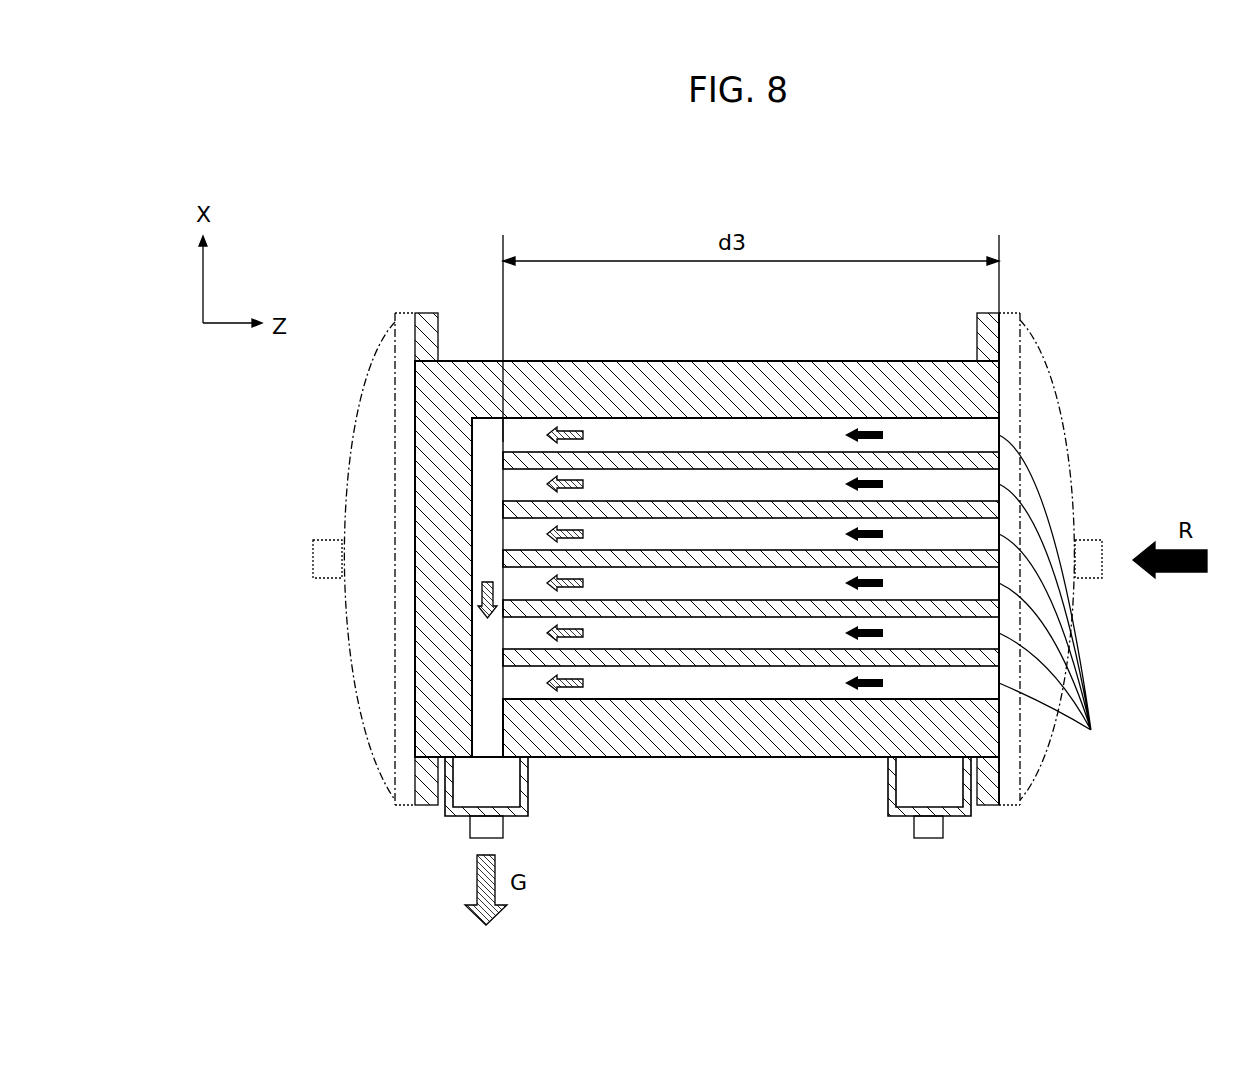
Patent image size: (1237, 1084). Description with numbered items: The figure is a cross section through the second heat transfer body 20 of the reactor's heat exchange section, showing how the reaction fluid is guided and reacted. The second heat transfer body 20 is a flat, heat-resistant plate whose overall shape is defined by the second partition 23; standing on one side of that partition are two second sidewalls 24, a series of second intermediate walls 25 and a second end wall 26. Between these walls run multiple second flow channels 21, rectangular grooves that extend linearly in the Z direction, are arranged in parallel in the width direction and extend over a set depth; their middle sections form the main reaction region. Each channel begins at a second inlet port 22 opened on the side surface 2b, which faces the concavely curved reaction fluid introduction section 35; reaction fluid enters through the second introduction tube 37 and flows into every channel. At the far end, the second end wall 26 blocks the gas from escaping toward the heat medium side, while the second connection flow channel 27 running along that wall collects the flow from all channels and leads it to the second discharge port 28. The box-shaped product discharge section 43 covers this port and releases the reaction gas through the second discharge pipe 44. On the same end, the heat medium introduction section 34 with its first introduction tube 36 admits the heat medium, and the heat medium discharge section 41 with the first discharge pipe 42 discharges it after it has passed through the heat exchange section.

The second heat transfer body 20 is at (700, 360).
The second flow channels 21 is at (942, 447).
The second inlet ports 22 is at (1064, 592).
The second partition 23 is at (648, 438).
The second sidewalls 24 is at (822, 370).
The second intermediate walls 25 is at (792, 462).
The second end wall 26 is at (440, 500).
The second connection flow channel 27 is at (490, 553).
The second discharge port 28 is at (478, 732).
The side surface 2b is at (1000, 728).
The heat medium introduction section 34 is at (372, 415).
The reaction fluid introduction section 35 is at (1043, 415).
The first introduction tube 36 is at (328, 540).
The second introduction tube 37 is at (1090, 540).
The heat medium discharge section 41 is at (888, 796).
The first discharge pipe 42 is at (912, 832).
The product discharge section 43 is at (528, 793).
The second discharge pipe 44 is at (505, 830).